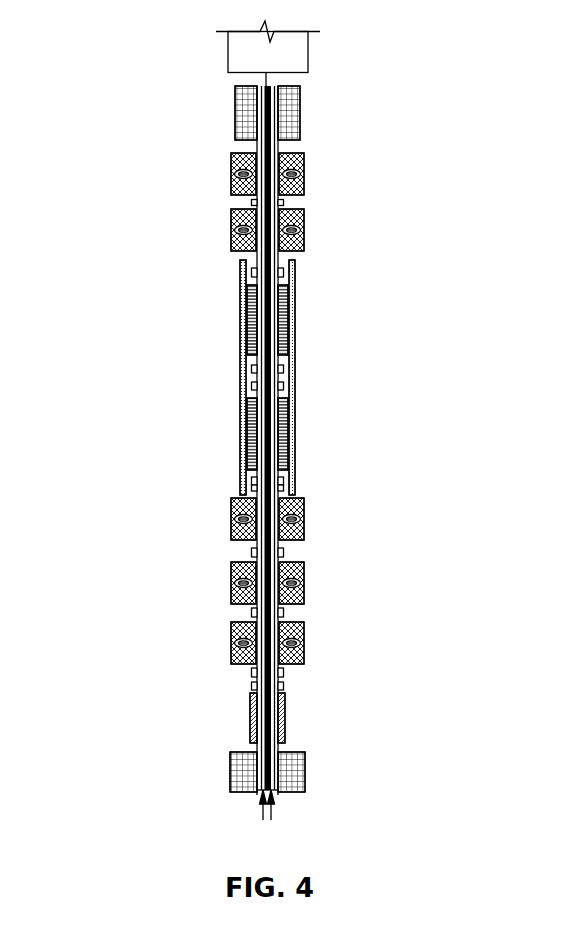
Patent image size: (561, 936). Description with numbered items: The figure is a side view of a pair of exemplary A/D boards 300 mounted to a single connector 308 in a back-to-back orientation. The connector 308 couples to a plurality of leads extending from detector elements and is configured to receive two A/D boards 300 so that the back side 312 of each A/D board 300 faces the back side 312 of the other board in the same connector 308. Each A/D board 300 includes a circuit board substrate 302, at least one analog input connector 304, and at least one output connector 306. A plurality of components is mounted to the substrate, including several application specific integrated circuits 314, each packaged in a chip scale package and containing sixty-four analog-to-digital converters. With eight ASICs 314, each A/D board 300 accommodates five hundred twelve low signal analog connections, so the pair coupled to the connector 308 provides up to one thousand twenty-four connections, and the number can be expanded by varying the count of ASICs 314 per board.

The A/D board 300 is at (123, 378).
The circuit board substrate 302 is at (262, 792).
The analog input connector 304 is at (233, 112).
The output connector 306 is at (230, 773).
The connector 308 is at (297, 55).
The back side 312 is at (262, 818).
The application specific integrated circuit (ASIC) 314 is at (250, 326).